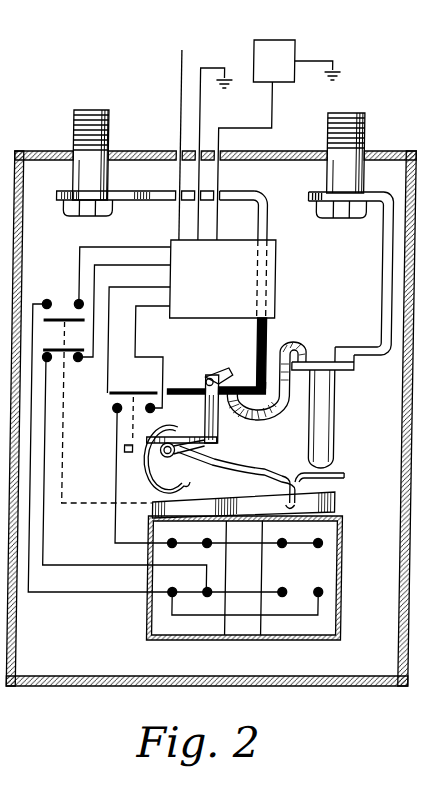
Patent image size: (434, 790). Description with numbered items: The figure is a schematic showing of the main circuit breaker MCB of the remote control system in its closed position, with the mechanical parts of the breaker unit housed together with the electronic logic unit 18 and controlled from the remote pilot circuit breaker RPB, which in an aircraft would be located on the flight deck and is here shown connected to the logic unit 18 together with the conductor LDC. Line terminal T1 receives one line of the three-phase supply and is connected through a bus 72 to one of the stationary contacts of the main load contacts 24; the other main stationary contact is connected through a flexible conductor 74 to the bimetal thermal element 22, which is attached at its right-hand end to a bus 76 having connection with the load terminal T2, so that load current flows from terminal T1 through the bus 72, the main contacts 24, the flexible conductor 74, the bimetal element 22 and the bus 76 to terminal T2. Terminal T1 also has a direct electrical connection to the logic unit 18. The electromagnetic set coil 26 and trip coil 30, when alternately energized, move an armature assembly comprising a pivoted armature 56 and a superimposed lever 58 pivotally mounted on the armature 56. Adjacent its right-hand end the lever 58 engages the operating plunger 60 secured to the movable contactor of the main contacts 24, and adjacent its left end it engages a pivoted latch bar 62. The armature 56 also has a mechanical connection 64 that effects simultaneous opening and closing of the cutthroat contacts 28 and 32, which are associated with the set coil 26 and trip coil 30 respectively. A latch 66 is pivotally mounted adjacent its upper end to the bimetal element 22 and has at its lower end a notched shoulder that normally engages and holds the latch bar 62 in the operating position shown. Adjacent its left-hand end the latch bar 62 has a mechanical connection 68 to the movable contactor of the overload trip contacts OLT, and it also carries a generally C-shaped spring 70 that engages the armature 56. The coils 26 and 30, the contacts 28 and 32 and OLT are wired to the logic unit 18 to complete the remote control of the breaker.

The main circuit breaker MCB is at (299, 688).
The terminal T1 is at (348, 118).
The load terminal T2 is at (91, 110).
The load current conductor LDC is at (192, 137).
The remote pilot circuit breaker RPB is at (280, 50).
The bus 76 is at (245, 195).
The electronic logic unit 18 is at (265, 275).
The cutthroat contacts 28 is at (56, 301).
The cutthroat contacts 32 is at (64, 364).
The overload trip contacts OLT is at (133, 408).
The mechanical connection 64 is at (98, 507).
The latch bar 62 is at (126, 453).
The mechanical connection 68 is at (123, 446).
The bimetal thermal element 22 is at (173, 388).
The latch 66 is at (207, 421).
The C-shaped spring 70 is at (186, 490).
The lever 58 is at (246, 470).
The operating plunger 60 is at (322, 400).
The main load contacts 24 is at (322, 358).
The bus 72 is at (377, 288).
The flexible conductor 74 is at (282, 402).
The pivoted armature 56 is at (333, 497).
The set coil 26 is at (310, 628).
The trip coil 30 is at (180, 627).